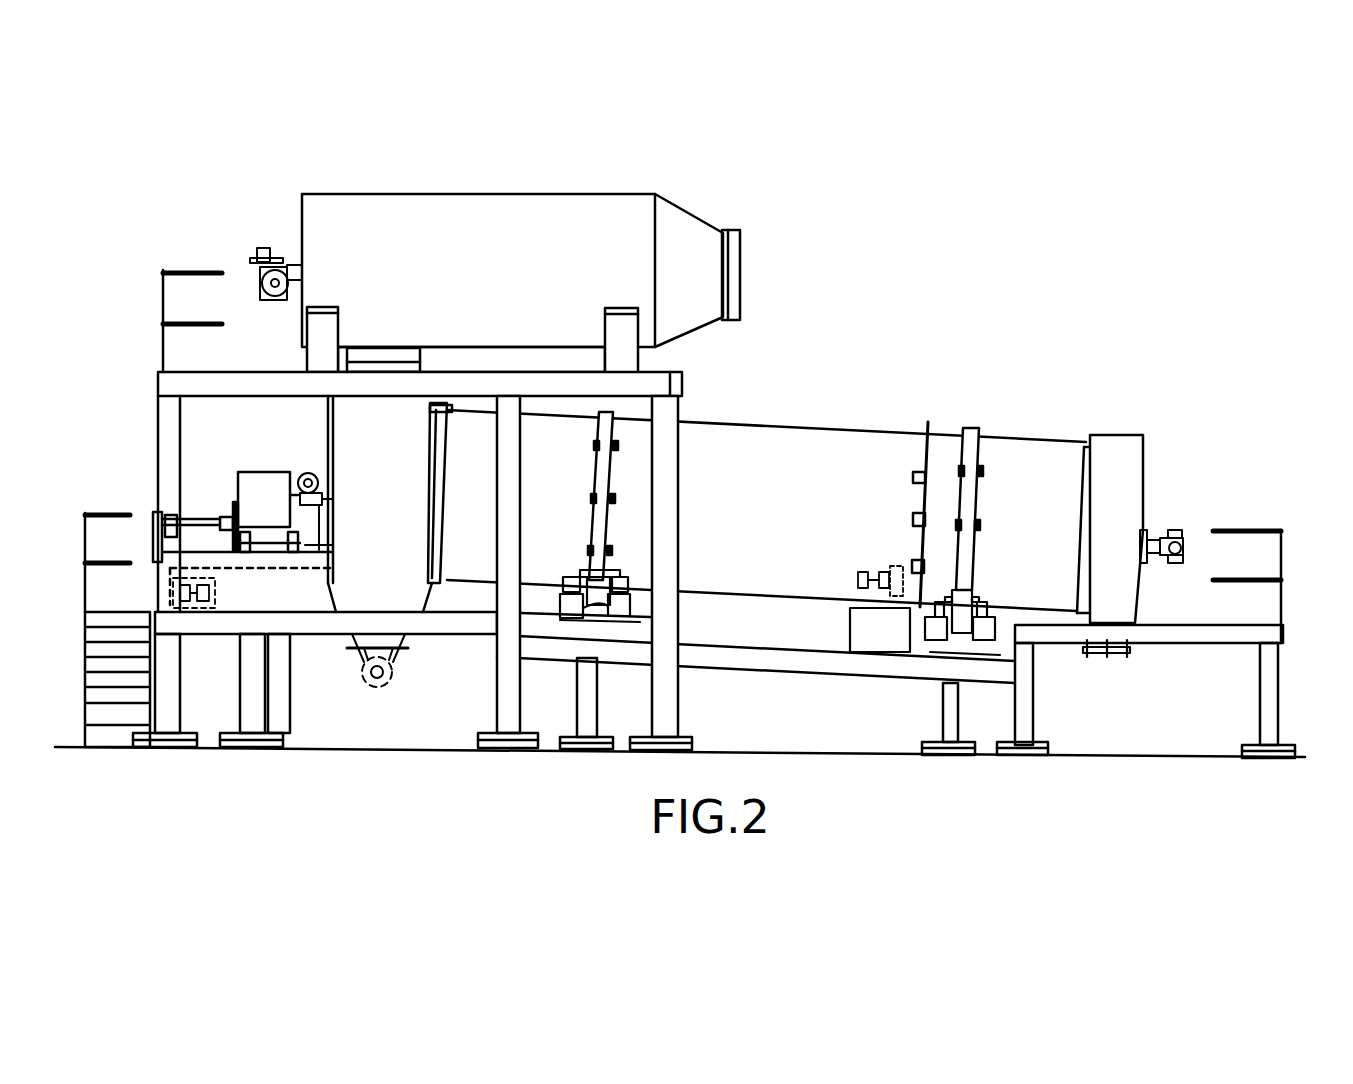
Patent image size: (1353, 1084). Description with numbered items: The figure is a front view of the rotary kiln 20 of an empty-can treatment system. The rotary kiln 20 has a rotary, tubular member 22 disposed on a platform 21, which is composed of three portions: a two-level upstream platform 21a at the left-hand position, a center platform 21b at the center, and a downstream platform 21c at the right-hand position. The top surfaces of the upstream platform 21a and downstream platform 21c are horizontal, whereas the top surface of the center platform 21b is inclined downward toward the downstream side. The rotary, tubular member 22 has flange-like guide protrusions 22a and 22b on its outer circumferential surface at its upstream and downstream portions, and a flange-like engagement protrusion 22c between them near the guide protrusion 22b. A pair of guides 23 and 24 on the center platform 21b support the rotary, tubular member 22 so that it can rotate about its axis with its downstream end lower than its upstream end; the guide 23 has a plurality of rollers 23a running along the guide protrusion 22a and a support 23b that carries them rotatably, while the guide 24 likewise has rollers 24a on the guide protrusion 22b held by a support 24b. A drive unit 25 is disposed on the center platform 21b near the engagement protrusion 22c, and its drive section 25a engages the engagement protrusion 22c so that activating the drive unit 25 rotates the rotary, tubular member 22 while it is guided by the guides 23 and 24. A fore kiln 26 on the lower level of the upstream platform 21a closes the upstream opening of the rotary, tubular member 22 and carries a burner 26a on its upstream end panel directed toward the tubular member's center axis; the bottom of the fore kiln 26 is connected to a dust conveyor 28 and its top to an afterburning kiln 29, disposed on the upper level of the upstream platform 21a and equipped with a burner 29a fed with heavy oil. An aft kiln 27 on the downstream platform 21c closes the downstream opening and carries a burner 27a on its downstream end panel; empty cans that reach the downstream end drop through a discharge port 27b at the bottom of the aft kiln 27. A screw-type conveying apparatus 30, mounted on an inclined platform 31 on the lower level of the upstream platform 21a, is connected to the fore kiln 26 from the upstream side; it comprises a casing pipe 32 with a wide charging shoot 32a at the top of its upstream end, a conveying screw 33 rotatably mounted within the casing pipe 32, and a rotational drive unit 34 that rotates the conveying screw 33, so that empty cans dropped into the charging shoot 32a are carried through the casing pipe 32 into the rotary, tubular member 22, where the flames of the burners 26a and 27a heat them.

The rotary kiln 20 is at (927, 380).
The platform 21 is at (683, 410).
The upstream platform 21a is at (339, 636).
The center platform 21b is at (767, 672).
The downstream platform 21c is at (1212, 646).
The rotary, tubular member 22 is at (850, 430).
The guide protrusion 22a is at (593, 433).
The guide protrusion 22b is at (978, 488).
The engagement protrusion 22c is at (925, 457).
The guide 23 is at (652, 624).
The rollers 23a is at (587, 573).
The support 23b is at (657, 595).
The guide 24 is at (985, 650).
The rollers 24a is at (968, 590).
The support 24b is at (927, 632).
The drive unit 25 is at (850, 628).
The drive section 25a is at (867, 603).
The fore kiln 26 is at (327, 412).
The burner 26a is at (300, 472).
The aft kiln 27 is at (1143, 448).
The burner 27a is at (1172, 530).
The discharge port 27b is at (1112, 654).
The dust conveyor 28 is at (382, 675).
The afterburning kiln 29 is at (537, 195).
The burner 29a is at (265, 283).
The screw-type conveying apparatus 30 is at (224, 504).
The platform 31 is at (248, 570).
The casing pipe 32 is at (288, 570).
The charging shoot 32a is at (262, 471).
The conveying screw 33 is at (203, 520).
The rotational drive unit 34 is at (180, 588).